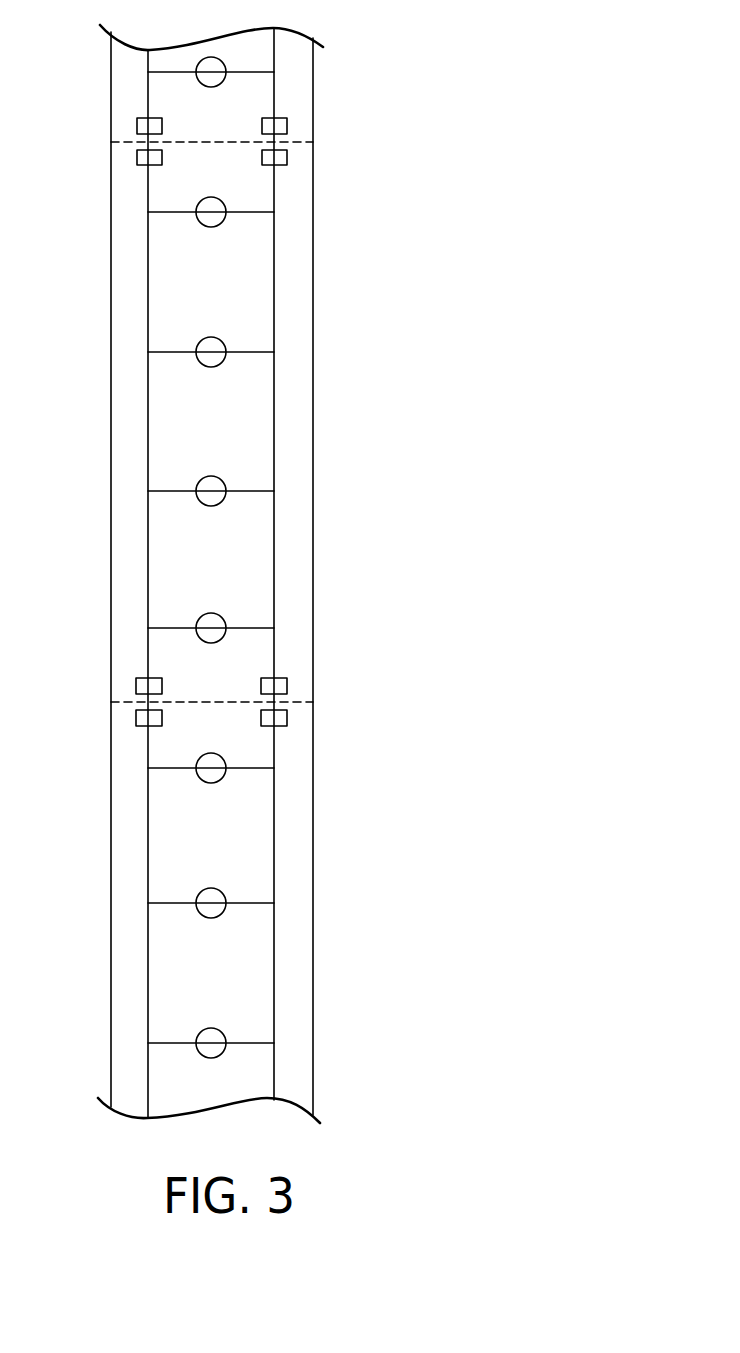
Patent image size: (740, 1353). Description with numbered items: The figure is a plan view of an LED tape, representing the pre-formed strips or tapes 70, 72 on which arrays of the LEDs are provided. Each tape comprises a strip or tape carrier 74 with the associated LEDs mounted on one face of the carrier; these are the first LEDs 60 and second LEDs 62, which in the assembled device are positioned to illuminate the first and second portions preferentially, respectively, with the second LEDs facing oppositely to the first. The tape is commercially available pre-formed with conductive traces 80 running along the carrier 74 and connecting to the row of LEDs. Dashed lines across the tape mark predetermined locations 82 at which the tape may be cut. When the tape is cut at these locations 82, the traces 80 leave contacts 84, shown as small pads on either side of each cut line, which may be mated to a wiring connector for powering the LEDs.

The first LEDs 60 is at (266, 557).
The second LEDs 62 is at (214, 346).
The strip or tape 70 is at (244, 574).
The strip or tape 72 is at (244, 574).
The strip or tape carrier 74 is at (297, 573).
The conductive traces 80 is at (275, 823).
The predetermined locations 82 is at (300, 140).
The contacts 84 is at (143, 125).